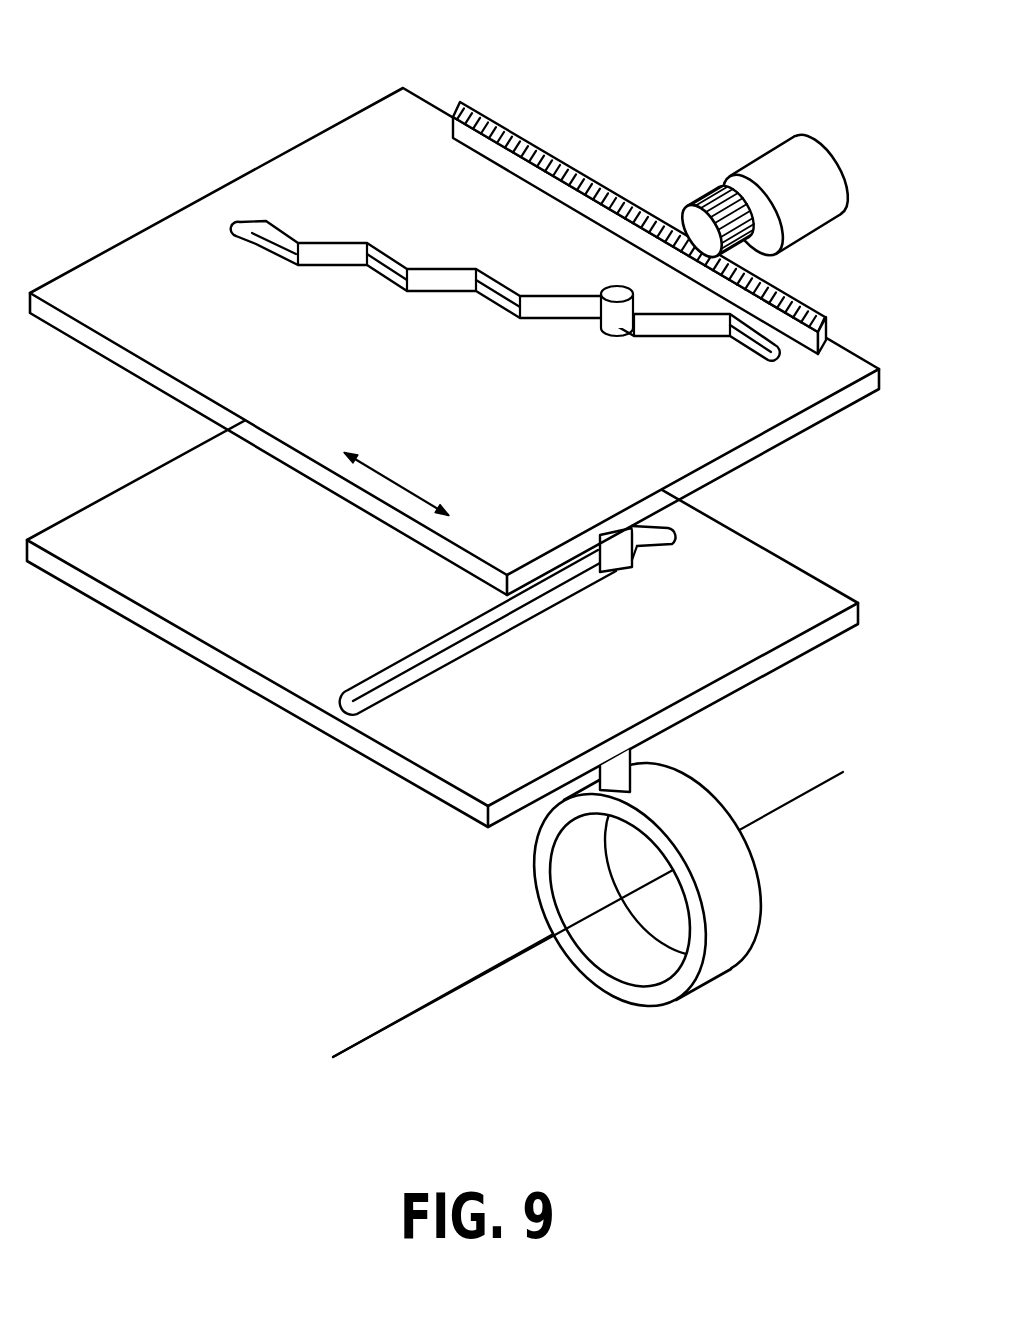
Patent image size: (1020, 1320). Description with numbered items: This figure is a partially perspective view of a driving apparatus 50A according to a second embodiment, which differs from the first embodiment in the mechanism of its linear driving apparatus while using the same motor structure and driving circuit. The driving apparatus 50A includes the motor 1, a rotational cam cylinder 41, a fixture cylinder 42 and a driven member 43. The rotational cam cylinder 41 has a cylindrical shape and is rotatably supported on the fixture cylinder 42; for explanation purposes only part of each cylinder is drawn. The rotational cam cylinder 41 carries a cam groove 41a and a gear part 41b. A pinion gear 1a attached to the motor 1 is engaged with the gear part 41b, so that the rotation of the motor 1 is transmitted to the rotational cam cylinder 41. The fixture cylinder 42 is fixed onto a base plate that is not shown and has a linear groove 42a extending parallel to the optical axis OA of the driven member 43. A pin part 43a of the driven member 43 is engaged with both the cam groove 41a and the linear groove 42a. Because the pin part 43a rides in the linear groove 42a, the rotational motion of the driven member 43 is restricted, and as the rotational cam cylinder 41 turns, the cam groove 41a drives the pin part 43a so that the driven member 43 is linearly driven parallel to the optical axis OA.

The driving apparatus 50A is at (142, 38).
The motor 1 is at (768, 165).
The pinion gear 1a is at (683, 205).
The rotational cam cylinder 41 is at (340, 145).
The cam groove 41a is at (273, 226).
The gear part 41b is at (613, 187).
The fixture cylinder 42 is at (217, 621).
The linear groove 42a is at (357, 683).
The driven member 43 is at (720, 962).
The pin part 43a is at (647, 542).
The optical axis OA is at (606, 901).